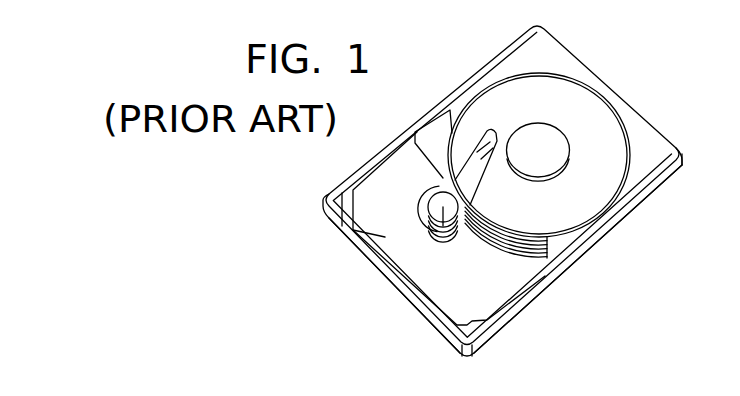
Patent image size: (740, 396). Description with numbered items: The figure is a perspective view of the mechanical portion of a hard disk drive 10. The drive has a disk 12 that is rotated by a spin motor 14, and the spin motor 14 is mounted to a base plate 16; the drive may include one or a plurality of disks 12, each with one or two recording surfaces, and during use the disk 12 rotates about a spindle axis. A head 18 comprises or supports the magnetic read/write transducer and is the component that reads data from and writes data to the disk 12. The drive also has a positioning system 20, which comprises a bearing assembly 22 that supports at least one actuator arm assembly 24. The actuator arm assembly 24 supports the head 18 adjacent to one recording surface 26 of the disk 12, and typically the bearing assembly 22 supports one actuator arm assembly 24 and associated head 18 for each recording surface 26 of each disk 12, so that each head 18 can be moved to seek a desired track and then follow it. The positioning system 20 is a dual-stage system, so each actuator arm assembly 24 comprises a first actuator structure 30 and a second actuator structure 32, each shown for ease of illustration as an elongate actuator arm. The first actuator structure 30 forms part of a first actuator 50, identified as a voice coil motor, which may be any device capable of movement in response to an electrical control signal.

The disk drive 10 is at (308, 220).
The disk 12 is at (550, 97).
The spin motor 14 is at (550, 138).
The base plate 16 is at (445, 293).
The head 18 is at (460, 176).
The positioning system 20 is at (474, 252).
The bearing assembly 22 is at (452, 237).
The actuator arm assembly 24 is at (486, 178).
The recording surface 26 is at (605, 151).
The first actuator structure 30 is at (472, 200).
The second actuator structure 32 is at (480, 153).
The first actuator 50 is at (385, 237).